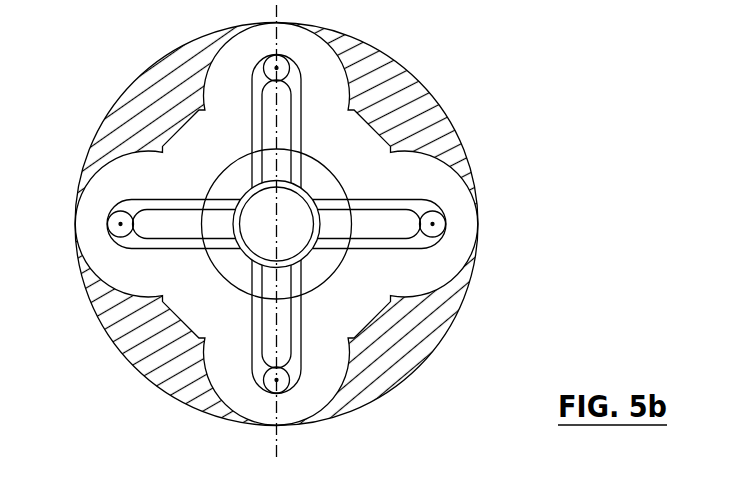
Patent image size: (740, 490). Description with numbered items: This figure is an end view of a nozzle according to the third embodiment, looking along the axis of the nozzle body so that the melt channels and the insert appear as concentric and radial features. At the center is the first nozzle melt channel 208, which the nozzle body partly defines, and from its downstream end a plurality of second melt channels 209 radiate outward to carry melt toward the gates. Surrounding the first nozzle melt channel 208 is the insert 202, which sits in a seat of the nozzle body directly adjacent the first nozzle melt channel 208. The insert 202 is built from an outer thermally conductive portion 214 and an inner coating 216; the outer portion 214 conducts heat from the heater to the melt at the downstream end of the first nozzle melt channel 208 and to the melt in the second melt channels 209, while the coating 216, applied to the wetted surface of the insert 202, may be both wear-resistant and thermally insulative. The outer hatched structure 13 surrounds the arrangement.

The housing 13 is at (430, 330).
The insert 202 is at (231, 271).
The first nozzle melt channel 208 is at (291, 243).
The second melt channels 209 is at (151, 235).
The outer thermally conductive portion 214 is at (241, 177).
The inner coating 216 is at (233, 182).